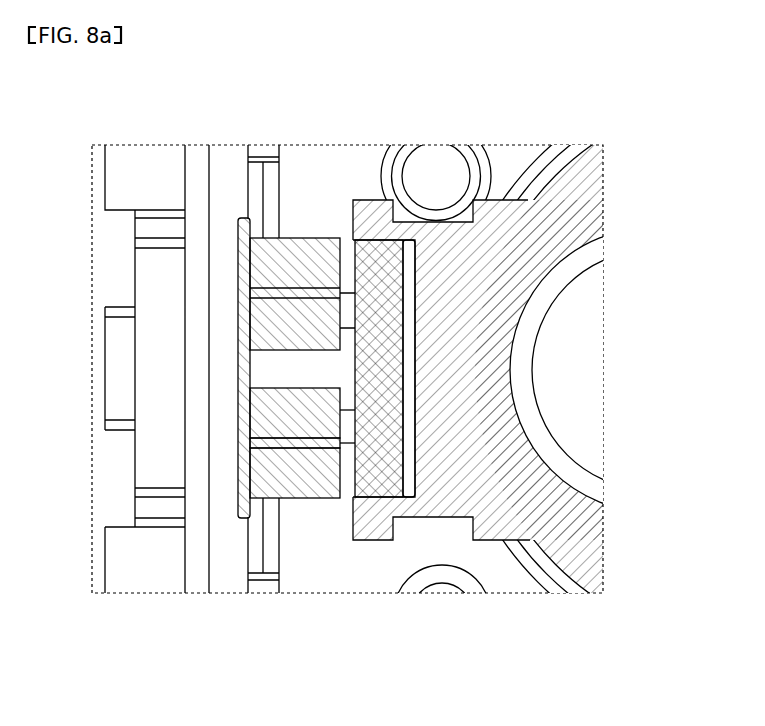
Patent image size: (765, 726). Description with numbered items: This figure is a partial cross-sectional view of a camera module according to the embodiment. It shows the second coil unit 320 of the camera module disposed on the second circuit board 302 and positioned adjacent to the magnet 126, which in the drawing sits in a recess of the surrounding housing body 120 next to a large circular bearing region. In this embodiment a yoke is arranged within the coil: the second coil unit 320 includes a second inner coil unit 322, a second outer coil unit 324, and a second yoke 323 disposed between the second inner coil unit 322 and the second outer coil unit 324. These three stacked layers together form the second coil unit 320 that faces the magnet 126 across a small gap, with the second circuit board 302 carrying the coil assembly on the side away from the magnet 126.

The second circuit board 302 is at (247, 275).
The housing body 120 is at (577, 345).
The magnet 126 is at (383, 403).
The second coil unit 320 is at (288, 535).
The second inner coil unit 322 is at (270, 422).
The second yoke 323 is at (312, 443).
The second outer coil unit 324 is at (292, 478).